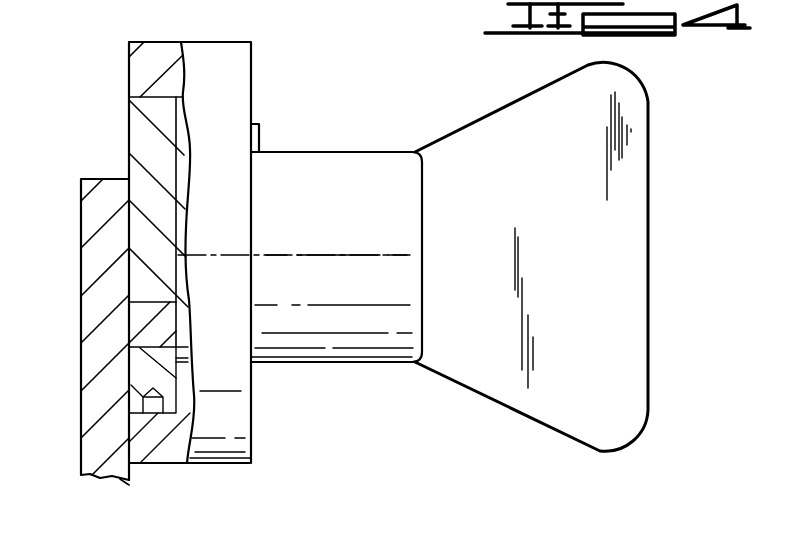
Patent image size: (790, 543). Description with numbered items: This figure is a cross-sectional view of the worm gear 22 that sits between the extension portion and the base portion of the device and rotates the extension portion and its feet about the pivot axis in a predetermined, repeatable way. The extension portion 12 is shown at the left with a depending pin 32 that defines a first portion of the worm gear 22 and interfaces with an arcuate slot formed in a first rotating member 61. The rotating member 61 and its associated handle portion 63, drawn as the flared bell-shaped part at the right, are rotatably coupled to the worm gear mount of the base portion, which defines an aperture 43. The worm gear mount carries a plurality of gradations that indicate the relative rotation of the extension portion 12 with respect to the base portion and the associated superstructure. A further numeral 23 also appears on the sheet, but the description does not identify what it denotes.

The extension portion 12 is at (97, 206).
The worm gear 22 is at (237, 86).
The housing top portion 23 is at (145, 7).
The depending pin 32 is at (157, 335).
The aperture 43 is at (151, 88).
The first rotating member 61 is at (147, 153).
The handle portion 63 is at (632, 203).